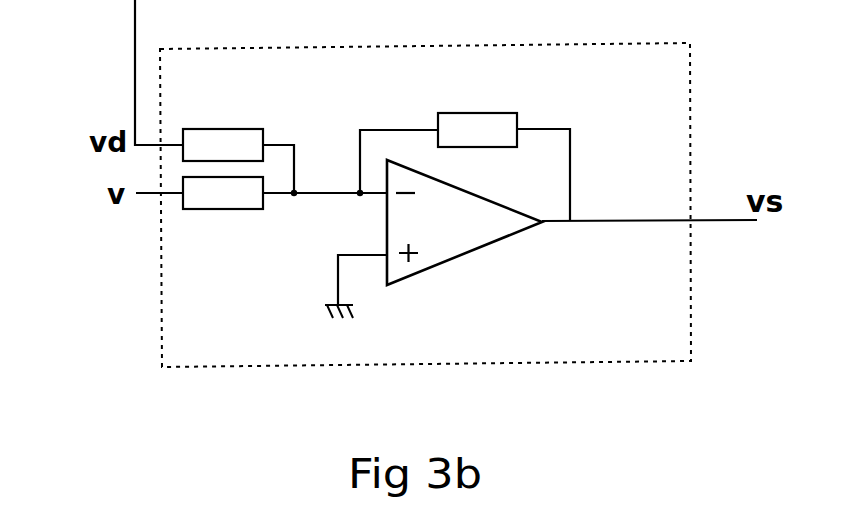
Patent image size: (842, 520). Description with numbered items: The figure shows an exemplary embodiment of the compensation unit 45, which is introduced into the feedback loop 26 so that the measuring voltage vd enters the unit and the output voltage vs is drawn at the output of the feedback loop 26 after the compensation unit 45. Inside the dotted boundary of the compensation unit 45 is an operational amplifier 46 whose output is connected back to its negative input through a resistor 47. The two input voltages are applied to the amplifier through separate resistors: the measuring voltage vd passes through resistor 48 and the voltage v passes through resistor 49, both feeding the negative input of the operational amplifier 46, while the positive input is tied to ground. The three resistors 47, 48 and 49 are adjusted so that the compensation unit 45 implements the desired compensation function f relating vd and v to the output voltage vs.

The feedback loop 26 is at (135, 12).
The compensation unit 45 is at (537, 366).
The operational amplifier 46 is at (453, 258).
The resistor 47 is at (503, 112).
The resistor 48 is at (207, 129).
The resistor 49 is at (217, 210).